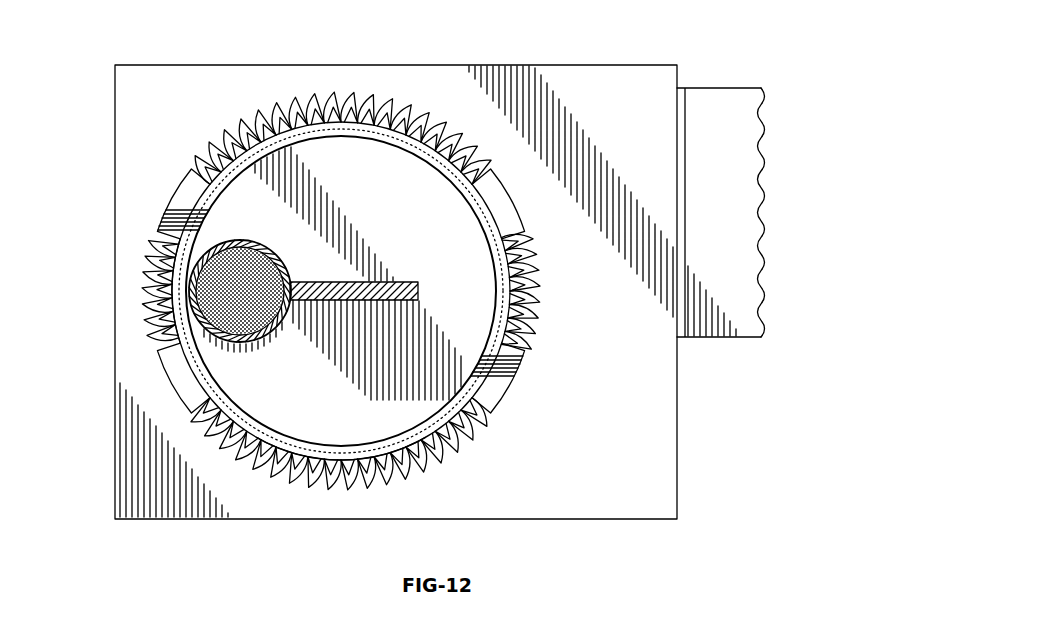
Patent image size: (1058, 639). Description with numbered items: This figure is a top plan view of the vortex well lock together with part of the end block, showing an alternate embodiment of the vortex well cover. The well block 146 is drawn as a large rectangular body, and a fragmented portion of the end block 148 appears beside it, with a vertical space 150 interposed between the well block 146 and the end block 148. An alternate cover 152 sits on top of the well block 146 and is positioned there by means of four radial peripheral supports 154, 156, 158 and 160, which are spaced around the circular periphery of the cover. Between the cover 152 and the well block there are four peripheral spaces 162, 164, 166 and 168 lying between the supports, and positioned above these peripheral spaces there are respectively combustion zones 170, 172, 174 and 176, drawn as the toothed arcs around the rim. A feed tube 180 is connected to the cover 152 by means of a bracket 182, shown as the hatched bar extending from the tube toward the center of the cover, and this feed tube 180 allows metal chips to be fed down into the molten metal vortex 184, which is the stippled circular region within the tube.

The well block 146 is at (645, 62).
The end block 148 is at (762, 122).
The vertical space 150 is at (681, 87).
The cover 152 is at (393, 167).
The radial peripheral support 154 is at (498, 198).
The radial peripheral support 156 is at (177, 198).
The radial peripheral support 158 is at (187, 393).
The radial peripheral support 160 is at (502, 382).
The peripheral space 162 is at (200, 328).
The peripheral space 164 is at (334, 458).
The peripheral space 166 is at (507, 268).
The peripheral space 168 is at (349, 122).
The combustion zone 170 is at (150, 290).
The combustion zone 172 is at (302, 483).
The combustion zone 174 is at (539, 296).
The combustion zone 176 is at (343, 94).
The feed tube 180 is at (279, 318).
The bracket 182 is at (353, 290).
The molten metal vortex 184 is at (252, 312).